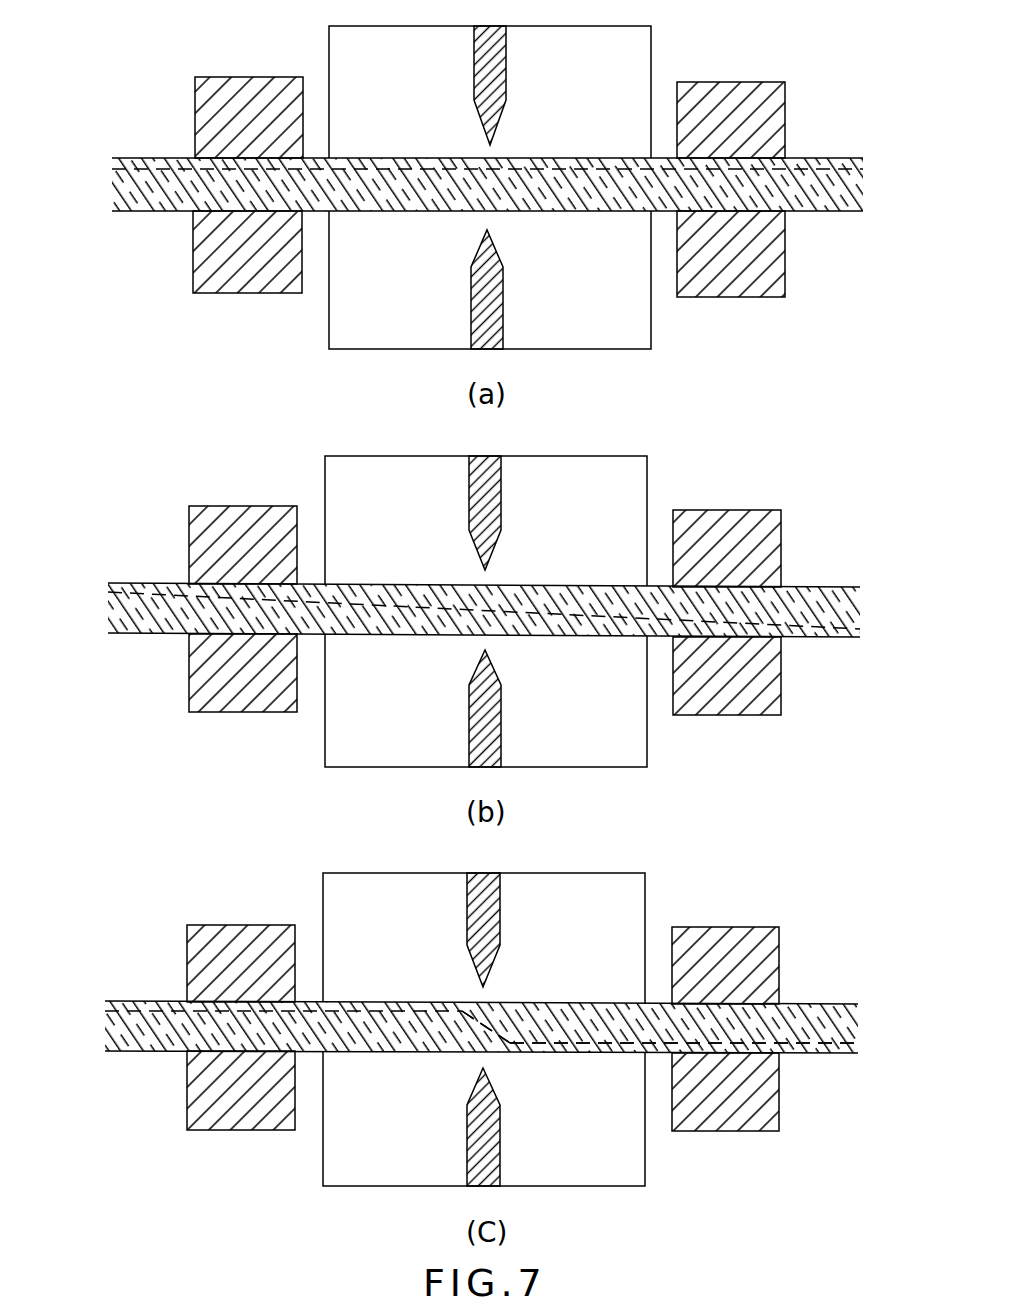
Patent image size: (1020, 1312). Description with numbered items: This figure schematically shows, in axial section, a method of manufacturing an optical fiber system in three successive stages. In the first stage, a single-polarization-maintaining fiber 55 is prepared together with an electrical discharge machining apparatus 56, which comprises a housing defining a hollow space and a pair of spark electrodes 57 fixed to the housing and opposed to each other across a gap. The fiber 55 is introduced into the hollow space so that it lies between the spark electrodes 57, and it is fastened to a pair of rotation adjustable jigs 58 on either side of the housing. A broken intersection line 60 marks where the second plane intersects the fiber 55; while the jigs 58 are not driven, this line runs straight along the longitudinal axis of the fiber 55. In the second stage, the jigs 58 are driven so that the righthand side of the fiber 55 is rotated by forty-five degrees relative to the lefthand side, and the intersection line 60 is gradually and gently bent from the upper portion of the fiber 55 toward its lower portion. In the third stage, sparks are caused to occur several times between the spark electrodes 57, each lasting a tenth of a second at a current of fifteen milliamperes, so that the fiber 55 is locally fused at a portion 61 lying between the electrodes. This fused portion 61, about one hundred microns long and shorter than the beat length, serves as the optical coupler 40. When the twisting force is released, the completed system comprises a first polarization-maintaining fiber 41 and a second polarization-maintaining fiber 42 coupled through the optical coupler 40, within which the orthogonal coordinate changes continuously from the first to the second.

The optical coupler 40 is at (516, 990).
The first polarization-maintaining fiber 41 is at (374, 1005).
The second polarization-maintaining fiber 42 is at (789, 1004).
The single-polarization-maintaining fiber 55 is at (150, 213).
The electrical discharge machining apparatus 56 is at (651, 42).
The spark electrodes 57 is at (506, 62).
The rotation adjustable jigs 58 is at (245, 295).
The intersection line 60 is at (829, 163).
The fused portion 61 is at (462, 1053).